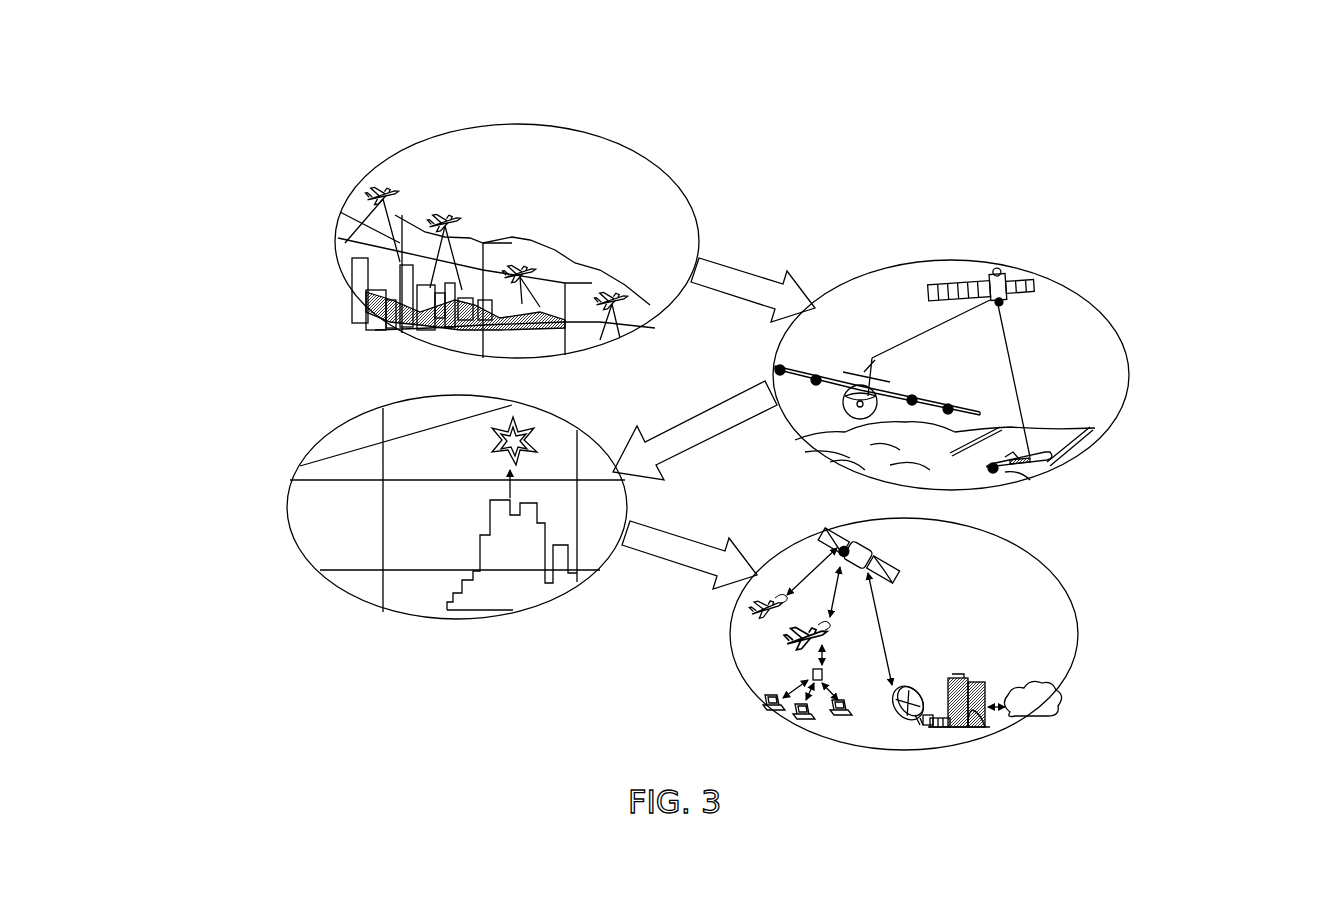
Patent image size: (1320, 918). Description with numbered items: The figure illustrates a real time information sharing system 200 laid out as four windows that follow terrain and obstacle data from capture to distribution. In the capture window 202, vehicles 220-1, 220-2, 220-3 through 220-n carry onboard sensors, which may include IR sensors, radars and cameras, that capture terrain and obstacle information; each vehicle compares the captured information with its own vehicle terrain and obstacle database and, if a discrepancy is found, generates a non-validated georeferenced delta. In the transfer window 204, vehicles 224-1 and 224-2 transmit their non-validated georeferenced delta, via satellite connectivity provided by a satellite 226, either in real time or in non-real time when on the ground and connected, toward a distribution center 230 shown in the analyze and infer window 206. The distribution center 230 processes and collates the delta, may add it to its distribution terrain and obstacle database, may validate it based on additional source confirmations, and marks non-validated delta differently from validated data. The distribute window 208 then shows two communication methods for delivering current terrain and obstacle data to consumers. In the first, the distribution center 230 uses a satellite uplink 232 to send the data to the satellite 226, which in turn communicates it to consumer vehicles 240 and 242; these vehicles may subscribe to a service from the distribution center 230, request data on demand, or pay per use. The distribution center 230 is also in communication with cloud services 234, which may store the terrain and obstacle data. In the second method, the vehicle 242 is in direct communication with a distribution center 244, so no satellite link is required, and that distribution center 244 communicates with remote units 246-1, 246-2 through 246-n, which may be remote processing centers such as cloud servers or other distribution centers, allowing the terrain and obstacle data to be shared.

The real time information sharing system 200 is at (1098, 55).
The window 202 is at (552, 148).
The window 204 is at (913, 272).
The window 206 is at (555, 435).
The window 208 is at (1050, 585).
The vehicle 220-1 is at (383, 190).
The vehicle 220-2 is at (445, 215).
The vehicle 220-3 is at (535, 258).
The vehicle 220-n is at (623, 290).
The vehicle 224-1 is at (858, 385).
The vehicle 224-2 is at (1050, 470).
The satellite 226 is at (1000, 270).
The distribution center 230 is at (512, 612).
The satellite uplink 232 is at (915, 685).
The cloud services 234 is at (1030, 718).
The consumer vehicle 240 is at (745, 605).
The consumer vehicle 242 is at (800, 640).
The distribution center 244 is at (822, 675).
The remote unit 246-1 is at (770, 705).
The remote unit 246-2 is at (795, 718).
The remote unit 246-n is at (840, 718).